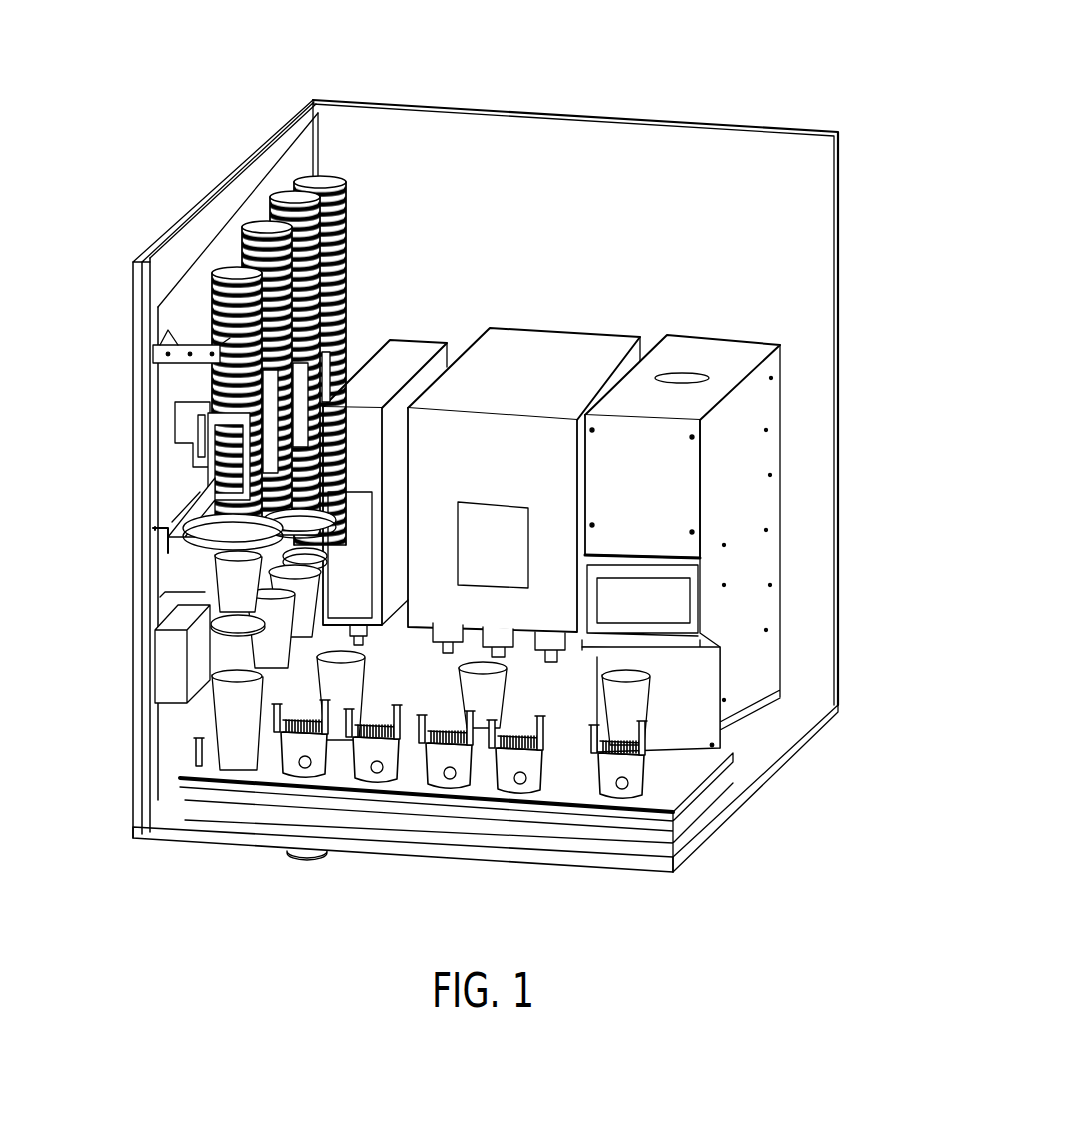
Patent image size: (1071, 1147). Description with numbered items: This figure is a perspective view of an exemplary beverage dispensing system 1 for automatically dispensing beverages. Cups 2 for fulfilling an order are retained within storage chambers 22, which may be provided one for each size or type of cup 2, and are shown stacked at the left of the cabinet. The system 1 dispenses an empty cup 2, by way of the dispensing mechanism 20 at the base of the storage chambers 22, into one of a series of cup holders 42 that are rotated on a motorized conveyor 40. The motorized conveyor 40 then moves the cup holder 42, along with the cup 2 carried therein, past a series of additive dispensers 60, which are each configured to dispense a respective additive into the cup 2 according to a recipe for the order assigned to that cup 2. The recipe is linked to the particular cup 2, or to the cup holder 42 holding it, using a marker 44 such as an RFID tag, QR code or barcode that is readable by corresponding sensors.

The beverage dispensing system 1 is at (667, 58).
The cup 2 is at (165, 341).
The cup dispensing mechanism 20 is at (200, 600).
The storage chamber 22 is at (311, 155).
The motorized conveyor 40 is at (348, 785).
The cup holder 42 is at (537, 785).
The marker 44 is at (623, 790).
The additive dispenser 60 is at (370, 459).